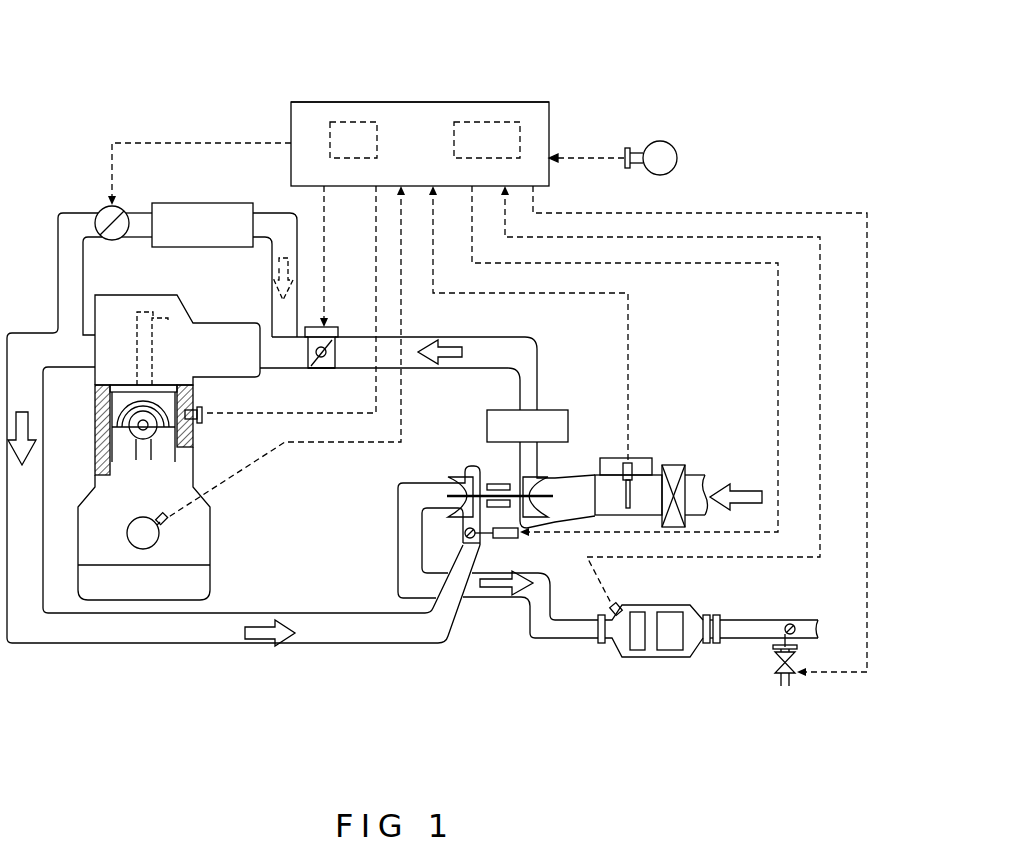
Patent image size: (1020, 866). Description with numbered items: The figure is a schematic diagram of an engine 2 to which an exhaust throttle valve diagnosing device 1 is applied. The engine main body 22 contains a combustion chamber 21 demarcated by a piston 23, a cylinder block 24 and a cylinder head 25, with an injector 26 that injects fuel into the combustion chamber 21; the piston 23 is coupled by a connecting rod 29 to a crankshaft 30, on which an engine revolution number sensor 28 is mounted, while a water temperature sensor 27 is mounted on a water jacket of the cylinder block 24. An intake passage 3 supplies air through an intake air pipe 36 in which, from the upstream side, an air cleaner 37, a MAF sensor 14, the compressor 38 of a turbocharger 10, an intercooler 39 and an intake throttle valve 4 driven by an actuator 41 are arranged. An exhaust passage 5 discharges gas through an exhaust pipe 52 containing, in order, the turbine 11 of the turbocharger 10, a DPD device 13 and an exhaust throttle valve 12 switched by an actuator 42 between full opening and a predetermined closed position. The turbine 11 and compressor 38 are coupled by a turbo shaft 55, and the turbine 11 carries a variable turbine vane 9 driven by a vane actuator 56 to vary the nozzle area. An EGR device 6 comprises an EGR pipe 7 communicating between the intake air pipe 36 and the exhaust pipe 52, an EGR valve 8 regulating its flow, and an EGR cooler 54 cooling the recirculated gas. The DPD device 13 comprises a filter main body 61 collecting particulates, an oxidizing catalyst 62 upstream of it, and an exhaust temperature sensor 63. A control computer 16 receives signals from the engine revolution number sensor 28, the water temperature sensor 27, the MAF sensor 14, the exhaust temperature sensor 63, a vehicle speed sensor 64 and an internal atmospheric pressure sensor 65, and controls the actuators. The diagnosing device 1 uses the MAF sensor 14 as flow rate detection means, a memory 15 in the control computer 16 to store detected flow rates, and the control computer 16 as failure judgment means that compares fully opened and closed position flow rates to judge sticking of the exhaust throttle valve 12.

The diagnosing device 1 is at (391, 120).
The engine 2 is at (93, 58).
The intake passage 3 is at (511, 406).
The intake throttle valve 4 is at (322, 372).
The exhaust passage 5 is at (243, 429).
The exhaust recirculation device 6 is at (147, 190).
The recirculation passage 7 is at (57, 283).
The recirculation valve 8 is at (95, 222).
The variable turbine vane 9 is at (480, 541).
The turbocharger 10 is at (484, 505).
The turbine 11 is at (458, 478).
The exhaust throttle valve 12 is at (788, 621).
The exhaust purifying filter device 13 is at (640, 628).
The MAF sensor 14 is at (622, 463).
The memory 15 is at (355, 122).
The control computer 16 is at (418, 102).
The combustion chamber 21 is at (95, 388).
The engine main body 22 is at (157, 523).
The piston 23 is at (142, 432).
The cylinder block 24 is at (95, 450).
The cylinder head 25 is at (177, 322).
The injector 26 is at (153, 310).
The water temperature sensor 27 is at (205, 425).
The engine revolution number sensor 28 is at (170, 530).
The connecting rod 29 is at (150, 455).
The crankshaft 30 is at (127, 530).
The intake air pipe 36 is at (452, 337).
The air cleaner 37 is at (675, 465).
The compressor 38 is at (540, 478).
The intercooler 39 is at (558, 410).
The actuator 41 is at (340, 327).
The actuator 42 is at (773, 652).
The exhaust pipe 52 is at (258, 645).
The EGR cooler 54 is at (203, 203).
The turbo shaft 55 is at (497, 482).
The vane actuator 56 is at (518, 538).
The filter main body 61 is at (680, 612).
The oxidizing catalyst 62 is at (637, 605).
The exhaust temperature sensor 63 is at (610, 610).
The vehicle speed sensor 64 is at (637, 148).
The atmospheric pressure sensor 65 is at (488, 122).